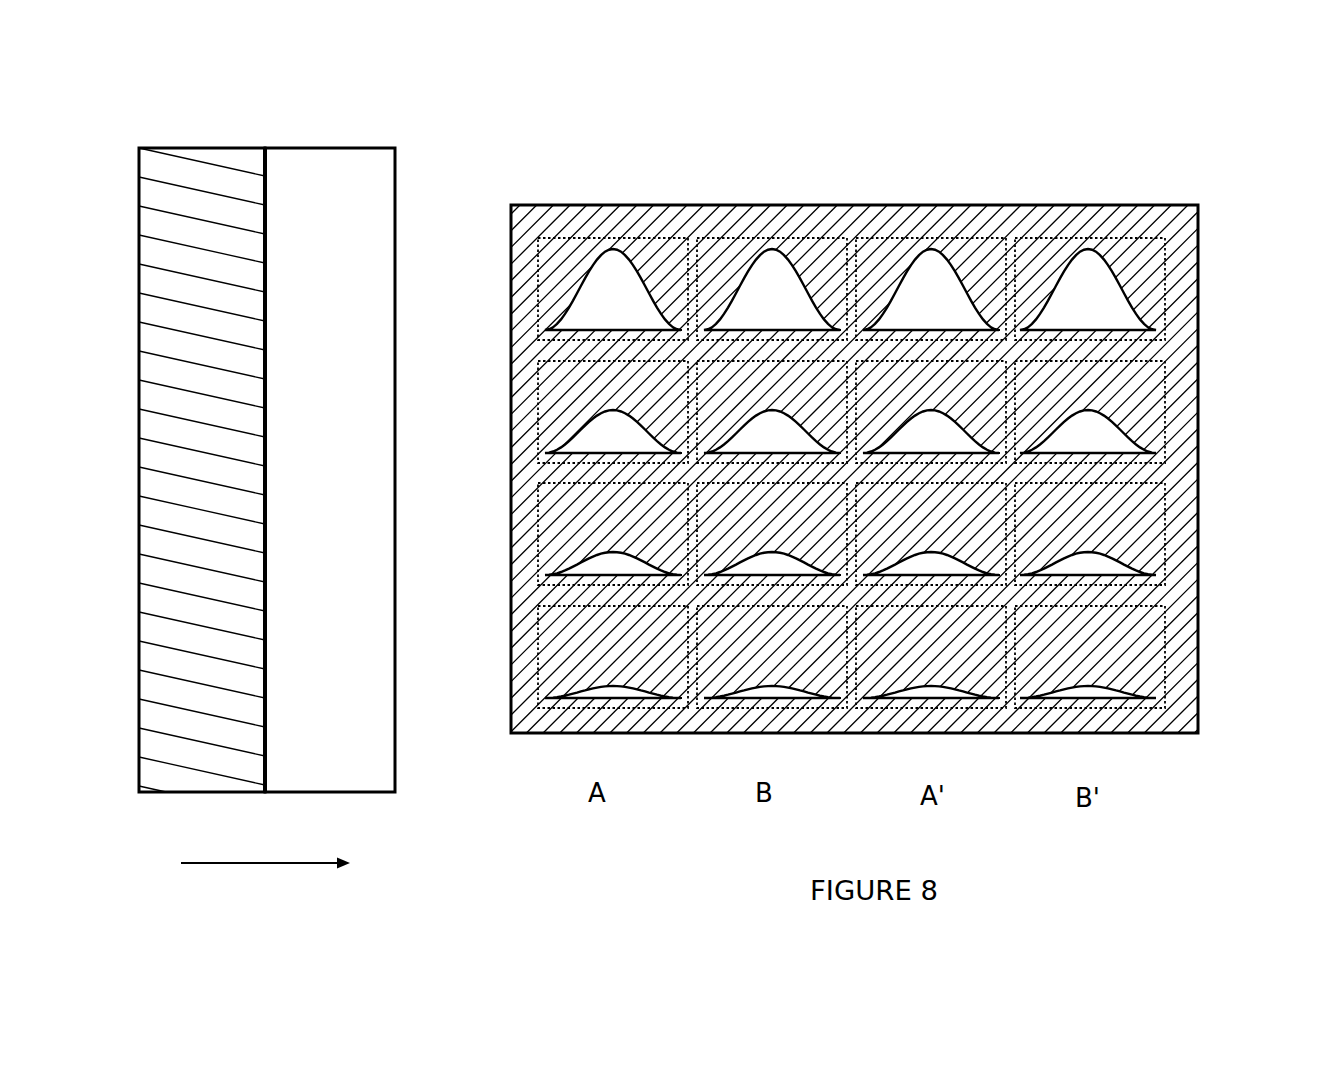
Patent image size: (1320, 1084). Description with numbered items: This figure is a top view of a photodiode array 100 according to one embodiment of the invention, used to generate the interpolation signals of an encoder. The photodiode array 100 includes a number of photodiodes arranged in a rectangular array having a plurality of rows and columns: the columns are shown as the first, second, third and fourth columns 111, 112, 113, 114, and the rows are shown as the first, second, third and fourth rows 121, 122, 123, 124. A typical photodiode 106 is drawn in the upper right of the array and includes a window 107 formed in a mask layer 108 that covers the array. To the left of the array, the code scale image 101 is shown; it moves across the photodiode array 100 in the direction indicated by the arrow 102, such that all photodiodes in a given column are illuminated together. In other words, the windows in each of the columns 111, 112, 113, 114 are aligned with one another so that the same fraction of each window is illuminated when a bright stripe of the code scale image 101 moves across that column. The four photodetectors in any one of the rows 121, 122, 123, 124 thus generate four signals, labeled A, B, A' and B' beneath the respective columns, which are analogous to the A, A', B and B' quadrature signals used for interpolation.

The photodiode array 100 is at (483, 126).
The code scale image 101 is at (200, 148).
The arrow 102 is at (263, 863).
The photodiode 106 is at (1148, 253).
The window 107 is at (1103, 297).
The mask layer 108 is at (847, 218).
The first column 111 is at (607, 182).
The second column 112 is at (768, 182).
The third column 113 is at (940, 182).
The fourth column 114 is at (1085, 182).
The first row 121 is at (1236, 298).
The second row 122 is at (1236, 427).
The third row 123 is at (1236, 555).
The fourth row 124 is at (1236, 685).